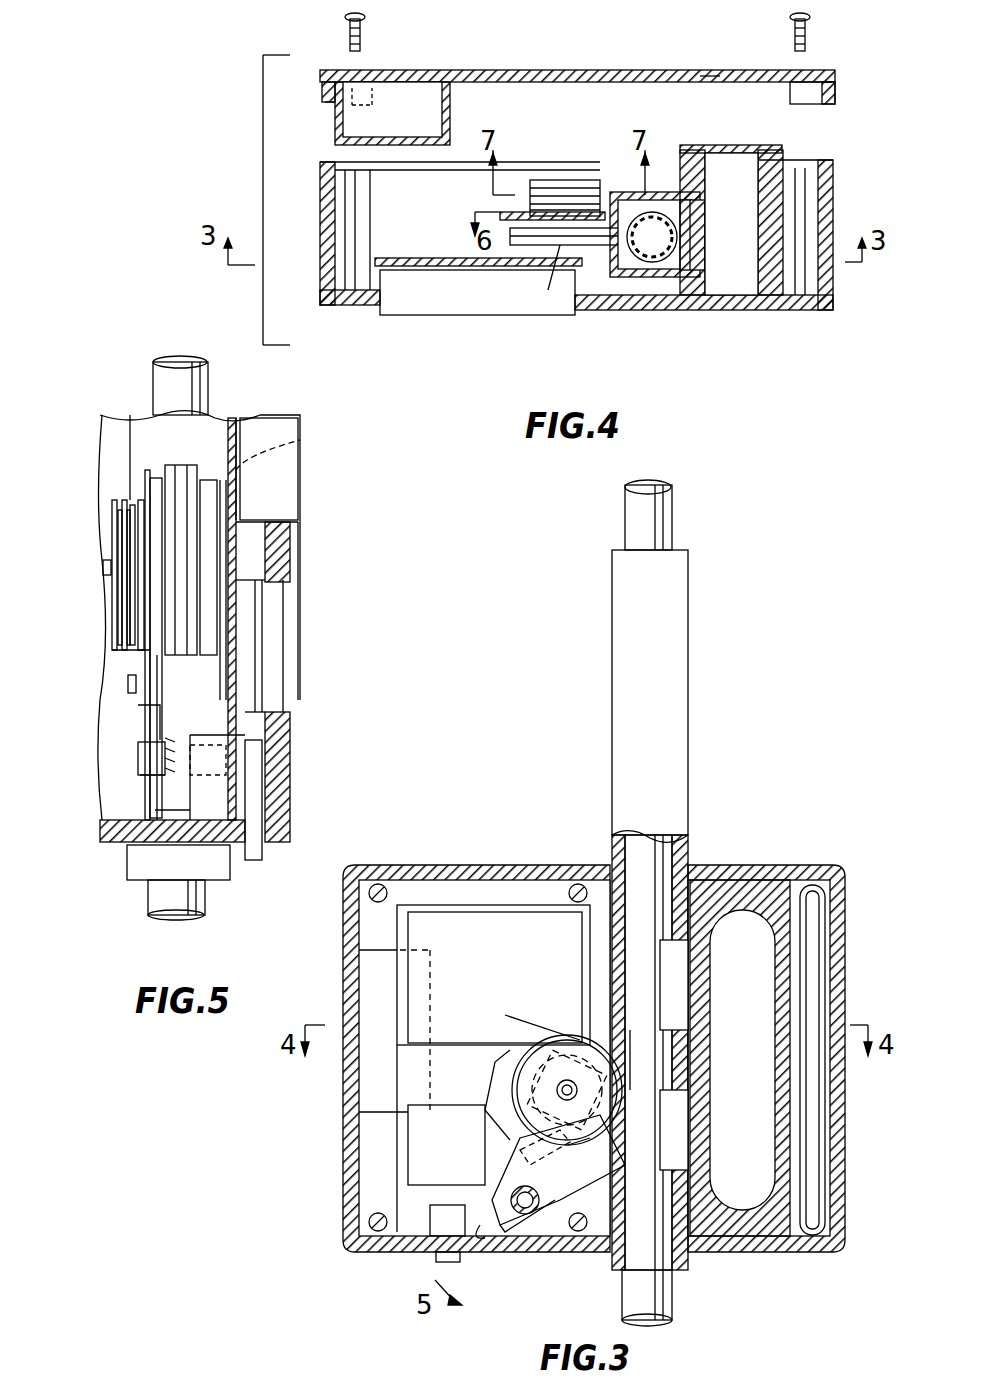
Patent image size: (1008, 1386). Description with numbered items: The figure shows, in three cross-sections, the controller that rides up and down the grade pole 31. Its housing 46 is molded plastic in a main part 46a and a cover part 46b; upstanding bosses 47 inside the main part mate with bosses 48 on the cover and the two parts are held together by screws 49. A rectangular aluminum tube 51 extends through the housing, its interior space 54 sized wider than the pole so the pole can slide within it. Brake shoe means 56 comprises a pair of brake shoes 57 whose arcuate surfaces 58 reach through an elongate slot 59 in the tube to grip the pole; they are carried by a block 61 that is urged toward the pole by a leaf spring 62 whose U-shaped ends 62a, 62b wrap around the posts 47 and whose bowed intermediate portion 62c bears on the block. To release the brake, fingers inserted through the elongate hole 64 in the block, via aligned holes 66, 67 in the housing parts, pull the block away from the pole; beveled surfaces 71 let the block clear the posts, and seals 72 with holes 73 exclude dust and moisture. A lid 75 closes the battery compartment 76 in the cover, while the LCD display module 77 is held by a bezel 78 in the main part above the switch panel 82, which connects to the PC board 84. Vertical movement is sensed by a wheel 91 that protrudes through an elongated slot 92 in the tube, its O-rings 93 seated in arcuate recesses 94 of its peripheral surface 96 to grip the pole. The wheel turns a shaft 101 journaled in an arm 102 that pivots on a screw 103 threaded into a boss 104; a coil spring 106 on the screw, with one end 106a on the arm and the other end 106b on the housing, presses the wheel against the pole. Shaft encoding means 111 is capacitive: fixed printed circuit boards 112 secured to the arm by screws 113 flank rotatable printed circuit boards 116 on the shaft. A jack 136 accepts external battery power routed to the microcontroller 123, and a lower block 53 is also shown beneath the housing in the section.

In FIG. 4, the grade pole 31 is at (600, 195).
In FIG. 5, the grade pole 31 is at (200, 385).
In FIG. 3, the grade pole 31 is at (665, 512).
In FIG. 4, the housing 46 is at (590, 318).
In FIG. 5, the housing 46 is at (292, 820).
In FIG. 3, the housing 46 is at (594, 1058).
In FIG. 4, the main part of housing 46a is at (830, 290).
In FIG. 4, the cover part of housing 46b is at (826, 70).
In FIG. 5, the cover part of housing 46b is at (292, 540).
In FIG. 4, the upstanding bosses 47 is at (352, 237).
In FIG. 3, the upstanding bosses 47 is at (378, 884).
In FIG. 4, the upstanding bosses 48 is at (328, 90).
In FIG. 4, the screws 49 is at (365, 30).
In FIG. 4, the tube 51 is at (628, 195).
In FIG. 3, the tube 51 is at (675, 735).
In FIG. 5, the lower block 53 is at (215, 875).
In FIG. 4, the interior space 54 is at (628, 268).
In FIG. 4, the brake shoe means 56 is at (735, 268).
In FIG. 3, the brake shoe means 56 is at (745, 1195).
In FIG. 4, the brake shoes 57 is at (700, 222).
In FIG. 3, the brake shoes 57 is at (675, 975).
In FIG. 4, the arcuate surfaces 58 is at (672, 240).
In FIG. 3, the elongate slot 59 is at (680, 1130).
In FIG. 3, the block 61 is at (715, 885).
In FIG. 3, the leaf spring 62 is at (822, 1010).
In FIG. 3, the end of leaf spring 62a is at (825, 945).
In FIG. 3, the end of leaf spring 62b is at (825, 1100).
In FIG. 3, the intermediate portion of leaf spring 62c is at (810, 980).
In FIG. 4, the elongate hole 64 is at (745, 150).
In FIG. 3, the elongate hole 64 is at (710, 930).
In FIG. 4, the hole 66 is at (705, 296).
In FIG. 4, the hole 67 is at (720, 72).
In FIG. 4, the beveled surfaces 71 is at (780, 305).
In FIG. 3, the beveled surfaces 71 is at (790, 900).
In FIG. 4, the seals 72 is at (775, 135).
In FIG. 4, the holes 73 is at (752, 295).
In FIG. 4, the lid 75 is at (430, 70).
In FIG. 4, the battery compartment 76 is at (392, 113).
In FIG. 3, the battery compartment 76 is at (398, 1032).
In FIG. 4, the LCD display module 77 is at (477, 292).
In FIG. 5, the LCD display module 77 is at (250, 415).
In FIG. 3, the LCD display module 77 is at (495, 977).
In FIG. 4, the bezel 78 is at (385, 316).
In FIG. 3, the bezel 78 is at (478, 905).
In FIG. 5, the switch panel 82 is at (270, 632).
In FIG. 3, the switch panel 82 is at (415, 1168).
In FIG. 4, the PC board 84 is at (440, 258).
In FIG. 5, the PC board 84 is at (185, 465).
In FIG. 3, the PC board 84 is at (400, 1150).
In FIG. 4, the wheel 91 is at (545, 290).
In FIG. 5, the wheel 91 is at (165, 485).
In FIG. 3, the wheel 91 is at (535, 1050).
In FIG. 4, the elongated slot 92 is at (625, 260).
In FIG. 5, the elongated slot 92 is at (215, 605).
In FIG. 3, the elongated slot 92 is at (600, 1052).
In FIG. 5, the O-rings 93 is at (165, 478).
In FIG. 5, the arcuate recesses 94 is at (269, 469).
In FIG. 5, the peripheral surface 96 is at (250, 470).
In FIG. 5, the shaft 101 is at (138, 570).
In FIG. 3, the shaft 101 is at (520, 1050).
In FIG. 5, the arm 102 is at (145, 655).
In FIG. 3, the arm 102 is at (560, 1236).
In FIG. 5, the screw 103 is at (140, 758).
In FIG. 3, the screw 103 is at (535, 1236).
In FIG. 5, the boss 104 is at (220, 742).
In FIG. 5, the coil spring 106 is at (165, 745).
In FIG. 3, the coil spring 106 is at (560, 1196).
In FIG. 5, the end of coil spring 106a is at (140, 705).
In FIG. 3, the end of coil spring 106a is at (522, 1162).
In FIG. 5, the end of coil spring 106b is at (155, 810).
In FIG. 3, the end of coil spring 106b is at (480, 1245).
In FIG. 5, the shaft encoding means 111 is at (100, 482).
In FIG. 4, the printed circuit boards 112 is at (540, 180).
In FIG. 5, the printed circuit boards 112 is at (125, 610).
In FIG. 3, the printed circuit boards 112 is at (515, 1140).
In FIG. 4, the screws 113 is at (585, 180).
In FIG. 5, the screws 113 is at (112, 515).
In FIG. 4, the rotatable printed circuit boards 116 is at (531, 275).
In FIG. 5, the rotatable printed circuit boards 116 is at (130, 540).
In FIG. 5, the microcontroller 123 is at (128, 683).
In FIG. 5, the jack 136 is at (262, 775).
In FIG. 3, the jack 136 is at (436, 1258).